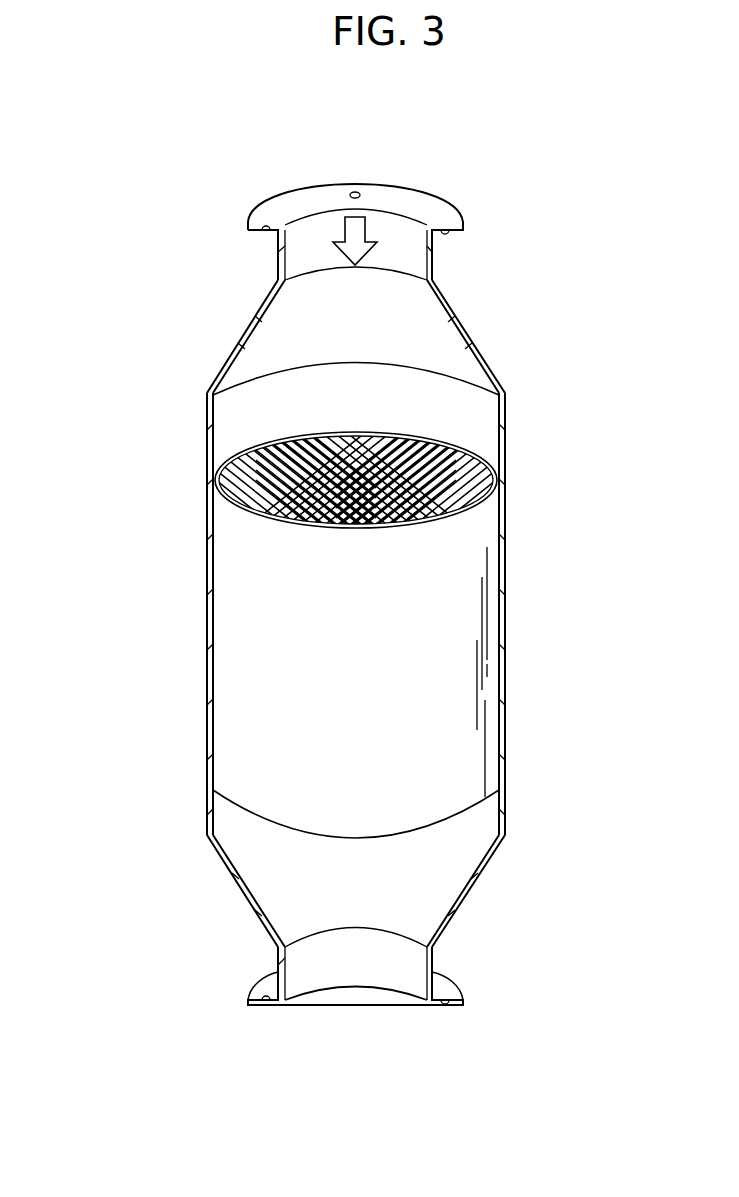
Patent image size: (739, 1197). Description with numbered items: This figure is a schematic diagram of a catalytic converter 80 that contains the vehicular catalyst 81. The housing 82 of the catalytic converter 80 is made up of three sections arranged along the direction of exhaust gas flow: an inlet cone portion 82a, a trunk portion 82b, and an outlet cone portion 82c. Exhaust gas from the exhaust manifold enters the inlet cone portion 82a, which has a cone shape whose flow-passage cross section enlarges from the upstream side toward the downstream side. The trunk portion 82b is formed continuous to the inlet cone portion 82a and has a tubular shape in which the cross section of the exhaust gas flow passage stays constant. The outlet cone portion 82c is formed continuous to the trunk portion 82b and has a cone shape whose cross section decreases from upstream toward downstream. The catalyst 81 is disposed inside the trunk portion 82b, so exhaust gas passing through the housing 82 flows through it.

The catalytic converter 80 is at (569, 246).
The catalyst 81 is at (468, 636).
The housing 82 is at (115, 477).
The inlet cone portion 82a is at (225, 367).
The trunk portion 82b is at (207, 627).
The outlet cone portion 82c is at (238, 880).